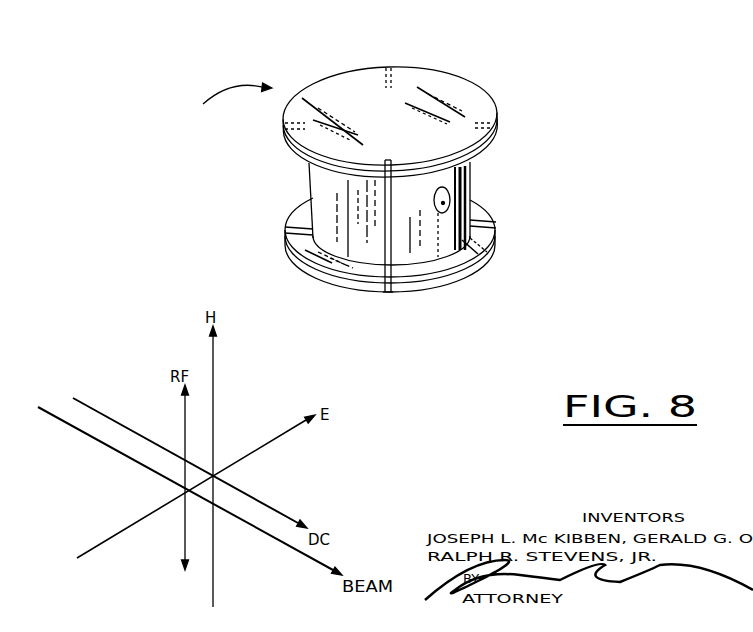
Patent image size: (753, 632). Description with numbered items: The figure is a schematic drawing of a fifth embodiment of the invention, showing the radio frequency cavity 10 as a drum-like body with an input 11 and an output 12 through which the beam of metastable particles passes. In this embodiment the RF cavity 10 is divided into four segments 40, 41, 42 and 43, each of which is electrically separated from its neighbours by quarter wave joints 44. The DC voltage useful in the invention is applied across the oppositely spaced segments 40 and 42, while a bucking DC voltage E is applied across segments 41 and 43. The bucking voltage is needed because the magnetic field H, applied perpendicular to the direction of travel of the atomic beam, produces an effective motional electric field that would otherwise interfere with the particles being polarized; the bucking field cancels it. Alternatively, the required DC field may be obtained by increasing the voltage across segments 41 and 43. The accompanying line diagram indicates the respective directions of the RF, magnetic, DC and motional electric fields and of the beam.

The radio frequency cavity 10 is at (503, 83).
The input 11 is at (226, 102).
The output 12 is at (468, 210).
The segment 40 is at (458, 258).
The segment 41 is at (312, 252).
The segment 42 is at (325, 88).
The segment 43 is at (445, 87).
The quarter wave joints 44 is at (342, 70).